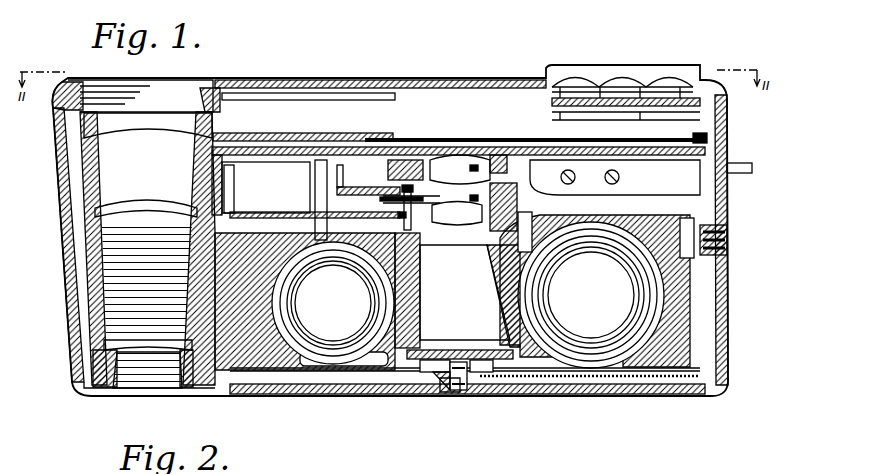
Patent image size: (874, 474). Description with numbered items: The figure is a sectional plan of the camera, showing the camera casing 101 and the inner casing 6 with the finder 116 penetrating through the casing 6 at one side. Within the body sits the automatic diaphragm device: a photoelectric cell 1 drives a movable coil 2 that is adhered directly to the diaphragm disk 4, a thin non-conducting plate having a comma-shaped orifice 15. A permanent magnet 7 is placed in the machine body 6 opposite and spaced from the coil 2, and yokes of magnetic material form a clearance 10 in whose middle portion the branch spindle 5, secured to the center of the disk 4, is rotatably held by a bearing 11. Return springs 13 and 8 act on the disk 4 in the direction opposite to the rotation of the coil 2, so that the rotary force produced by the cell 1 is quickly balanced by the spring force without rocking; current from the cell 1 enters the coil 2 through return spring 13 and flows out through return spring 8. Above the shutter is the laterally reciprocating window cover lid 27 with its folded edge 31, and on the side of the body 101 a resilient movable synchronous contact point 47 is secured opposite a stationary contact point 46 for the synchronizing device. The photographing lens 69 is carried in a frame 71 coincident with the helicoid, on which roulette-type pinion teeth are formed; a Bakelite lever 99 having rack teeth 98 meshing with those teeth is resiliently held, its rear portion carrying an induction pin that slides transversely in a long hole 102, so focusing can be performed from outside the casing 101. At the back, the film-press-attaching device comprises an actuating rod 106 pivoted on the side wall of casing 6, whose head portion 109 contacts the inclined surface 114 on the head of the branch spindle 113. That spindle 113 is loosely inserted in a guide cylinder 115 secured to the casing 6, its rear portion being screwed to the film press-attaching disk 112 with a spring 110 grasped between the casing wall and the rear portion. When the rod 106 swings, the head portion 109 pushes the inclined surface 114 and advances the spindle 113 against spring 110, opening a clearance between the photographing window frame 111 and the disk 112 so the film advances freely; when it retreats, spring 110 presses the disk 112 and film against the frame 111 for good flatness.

The photoelectric cell 1 is at (652, 107).
The movable coil 2 is at (358, 197).
The diaphragm disk 4 is at (380, 197).
The branch spindle 5 is at (415, 222).
The casing 6 is at (255, 350).
The permanent magnet 7 is at (285, 178).
The return spring 8 is at (445, 222).
The clearance 10 is at (390, 150).
The bearing 11 is at (427, 170).
The return spring 13 is at (462, 225).
The comma-shaped orifice 15 is at (460, 197).
The window cover lid 27 is at (720, 160).
The folded edge 31 is at (700, 140).
The stationary contact point 46 is at (668, 115).
The movable synchronous contact point 47 is at (595, 120).
The photographing lens 69 is at (480, 205).
The frame 71 is at (505, 168).
The rack teeth 98 is at (453, 130).
The lever 99 is at (563, 100).
The camera casing 101 is at (713, 352).
The long hole 102 is at (493, 167).
The actuating rod 106 is at (535, 385).
The head portion 109 is at (452, 382).
The spring 110 is at (440, 387).
The photographing window frame 111 is at (480, 345).
The film press-attaching disk 112 is at (433, 348).
The branch spindle 113 is at (448, 382).
The inclined surface 114 is at (447, 380).
The guide cylinder 115 is at (465, 375).
The finder 116 is at (187, 97).